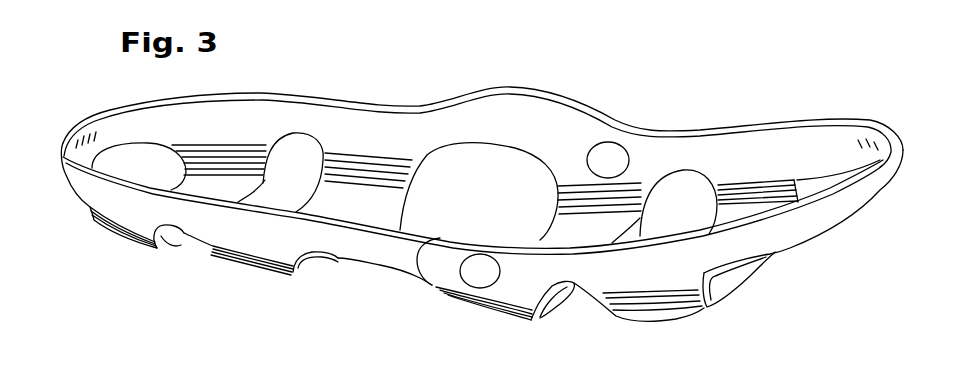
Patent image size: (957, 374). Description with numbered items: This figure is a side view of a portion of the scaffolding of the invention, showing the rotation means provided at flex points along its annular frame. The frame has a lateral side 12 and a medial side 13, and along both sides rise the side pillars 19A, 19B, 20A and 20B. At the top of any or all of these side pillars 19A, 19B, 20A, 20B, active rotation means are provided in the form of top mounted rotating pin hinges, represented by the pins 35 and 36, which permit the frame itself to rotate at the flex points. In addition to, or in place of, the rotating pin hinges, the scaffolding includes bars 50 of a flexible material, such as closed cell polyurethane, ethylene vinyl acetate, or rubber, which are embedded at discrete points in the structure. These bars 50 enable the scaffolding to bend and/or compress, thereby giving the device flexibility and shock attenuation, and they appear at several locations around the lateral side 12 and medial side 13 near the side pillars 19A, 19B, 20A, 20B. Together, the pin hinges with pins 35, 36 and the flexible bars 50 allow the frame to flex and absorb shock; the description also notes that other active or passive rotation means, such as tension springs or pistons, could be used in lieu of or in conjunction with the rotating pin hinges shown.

The lateral side 12 is at (389, 256).
The medial side 13 is at (475, 117).
The side pillar 19A is at (540, 322).
The side pillar 19B is at (670, 318).
The side pillar 20A is at (163, 254).
The side pillar 20B is at (294, 275).
The pin 35 is at (613, 155).
The pin 36 is at (478, 275).
The bar 50 is at (370, 158).